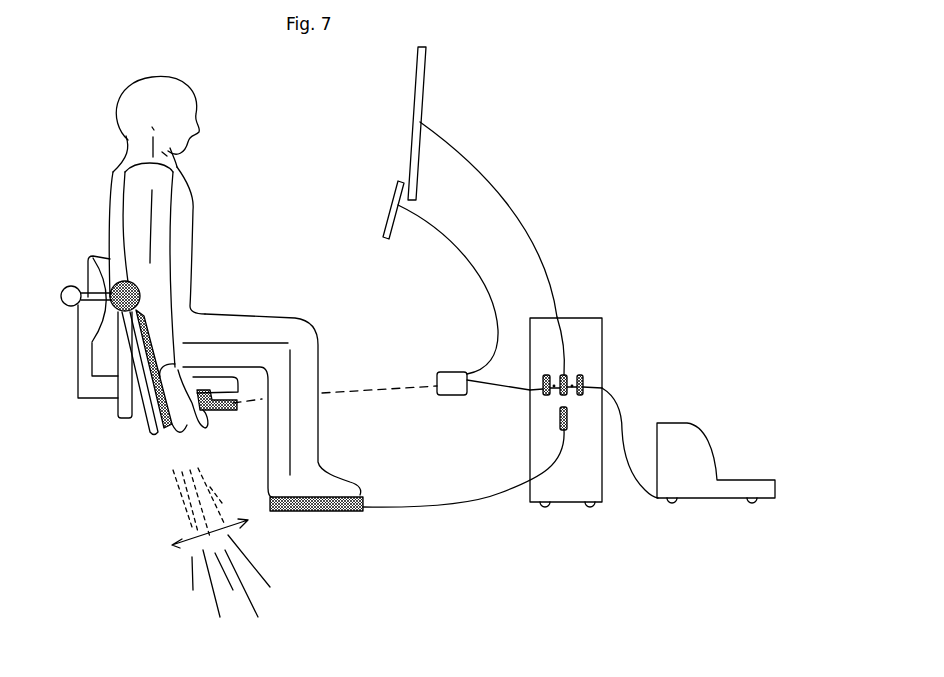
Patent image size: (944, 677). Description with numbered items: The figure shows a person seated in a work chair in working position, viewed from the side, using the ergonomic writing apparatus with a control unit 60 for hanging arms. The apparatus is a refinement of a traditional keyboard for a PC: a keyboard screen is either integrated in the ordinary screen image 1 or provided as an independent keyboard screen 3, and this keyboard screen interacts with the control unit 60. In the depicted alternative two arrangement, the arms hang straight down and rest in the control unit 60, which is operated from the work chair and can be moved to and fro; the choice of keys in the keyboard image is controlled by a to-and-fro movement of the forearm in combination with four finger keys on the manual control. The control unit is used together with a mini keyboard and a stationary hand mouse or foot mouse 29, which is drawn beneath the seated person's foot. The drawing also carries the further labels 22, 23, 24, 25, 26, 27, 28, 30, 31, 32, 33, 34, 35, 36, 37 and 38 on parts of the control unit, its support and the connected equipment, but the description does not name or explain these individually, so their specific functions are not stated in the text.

The ordinary screen image 1 is at (422, 104).
The independent keyboard screen 3 is at (400, 207).
The handle position 22 is at (251, 553).
The handle position 23 is at (236, 554).
The handle position 24 is at (221, 544).
The handle position 25 is at (207, 556).
The handle position 26 is at (190, 544).
The handle bar end 27 is at (215, 413).
The grip 28 is at (218, 416).
The foot mouse 29 is at (270, 506).
The sensor control box 30 is at (450, 387).
The computer 31 is at (544, 434).
The foot pedal device 32 is at (692, 462).
The arm support panel 33 is at (108, 282).
The hand grip and rods 34 is at (110, 290).
The adjustment knob 35 is at (65, 302).
The support frame 36 is at (108, 323).
The reference line 37 is at (392, 388).
The direction of handle movement 38 is at (172, 545).
The control unit 60 is at (285, 297).